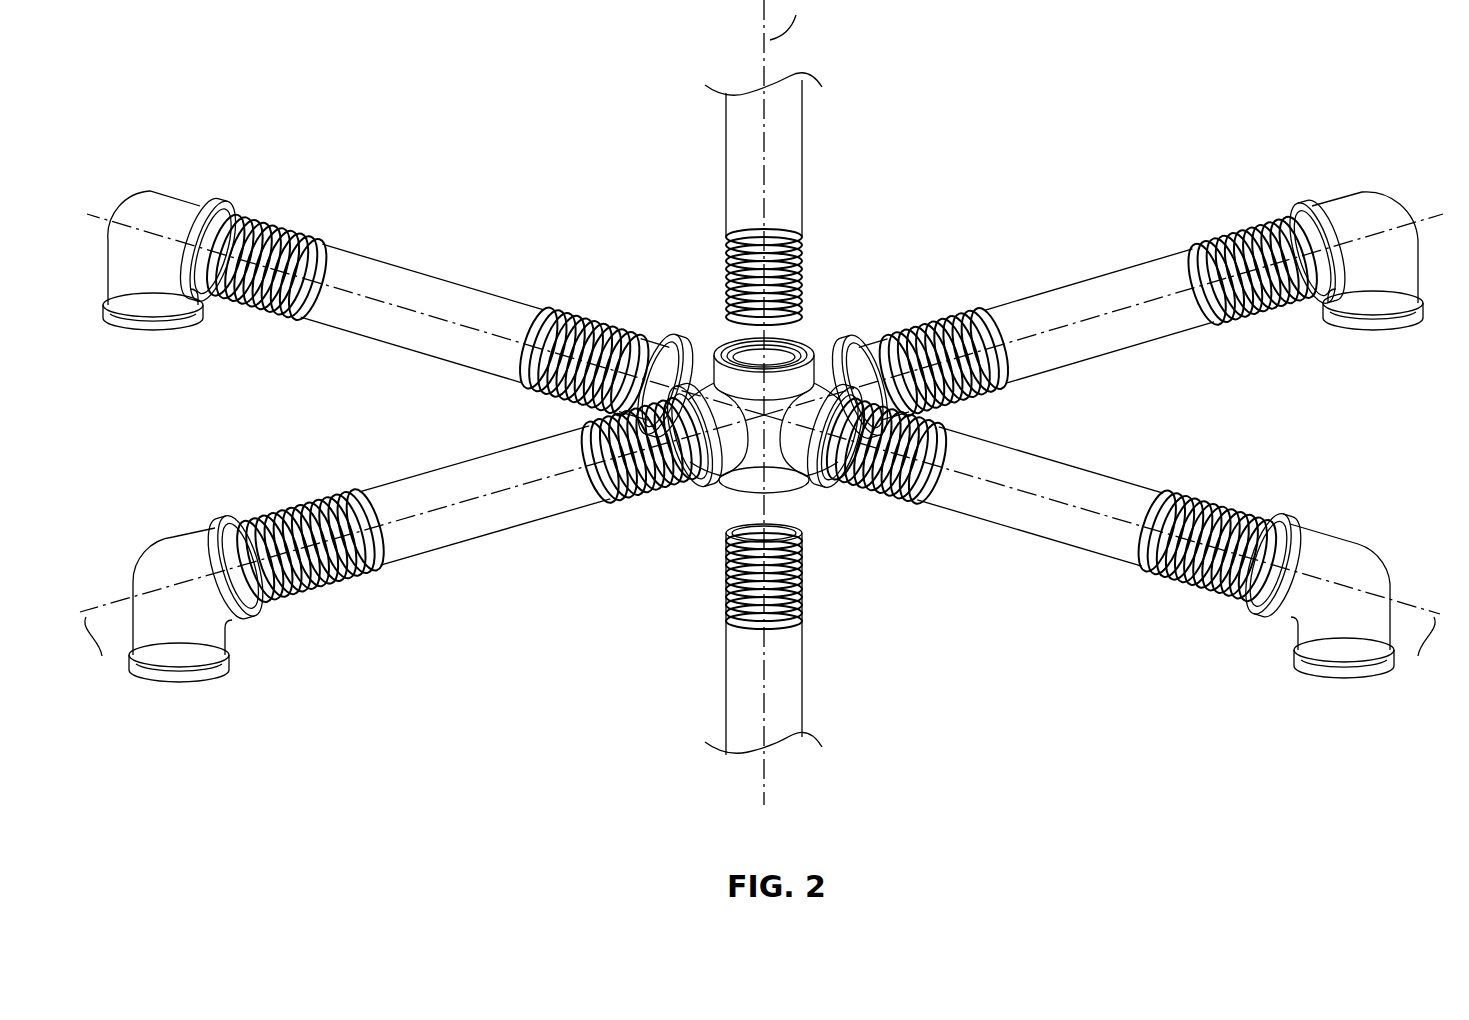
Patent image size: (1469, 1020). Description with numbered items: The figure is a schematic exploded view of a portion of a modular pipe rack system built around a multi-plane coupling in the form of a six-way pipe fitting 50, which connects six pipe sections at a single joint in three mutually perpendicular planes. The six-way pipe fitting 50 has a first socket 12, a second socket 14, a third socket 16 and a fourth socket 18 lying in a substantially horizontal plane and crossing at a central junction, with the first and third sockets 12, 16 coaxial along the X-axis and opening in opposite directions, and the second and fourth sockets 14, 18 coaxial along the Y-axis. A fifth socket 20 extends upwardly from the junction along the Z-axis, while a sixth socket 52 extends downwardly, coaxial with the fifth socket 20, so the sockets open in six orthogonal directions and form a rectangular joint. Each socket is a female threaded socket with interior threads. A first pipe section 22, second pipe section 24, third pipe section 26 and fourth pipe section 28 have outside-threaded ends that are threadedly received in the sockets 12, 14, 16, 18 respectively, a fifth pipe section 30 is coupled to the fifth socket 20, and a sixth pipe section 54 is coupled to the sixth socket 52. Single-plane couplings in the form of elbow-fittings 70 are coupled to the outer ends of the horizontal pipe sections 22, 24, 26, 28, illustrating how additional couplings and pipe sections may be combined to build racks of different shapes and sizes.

The first socket 12 is at (668, 488).
The second socket 14 is at (855, 487).
The third socket 16 is at (852, 345).
The fourth socket 18 is at (680, 345).
The fifth socket 20 is at (730, 345).
The first pipe section 22 is at (440, 552).
The second pipe section 24 is at (1070, 462).
The third pipe section 26 is at (1090, 280).
The fourth pipe section 28 is at (462, 288).
The fifth pipe section 30 is at (726, 147).
The six-way pipe fitting 50 is at (560, 418).
The sixth socket 52 is at (800, 480).
The sixth pipe section 54 is at (802, 680).
The elbow-fitting 70 is at (170, 202).